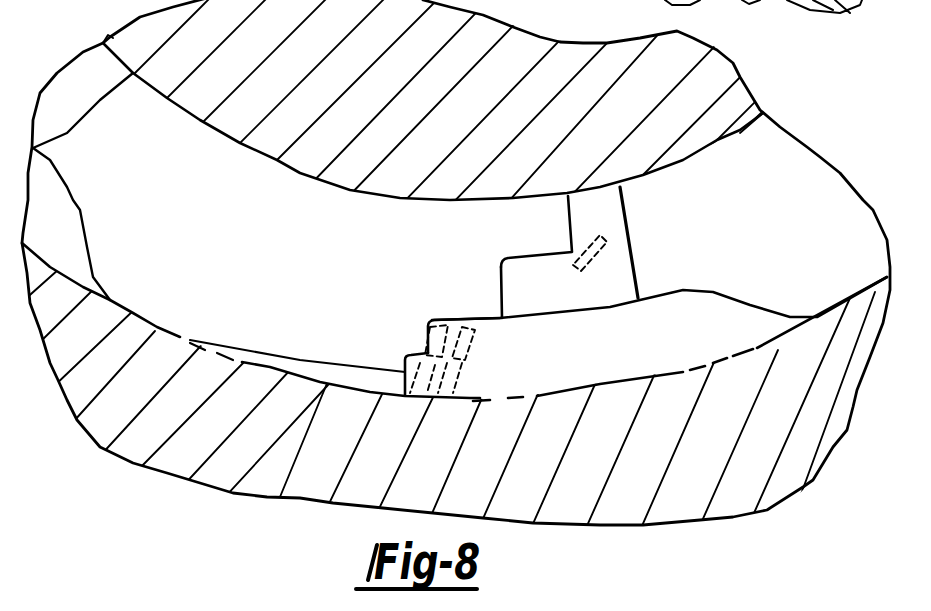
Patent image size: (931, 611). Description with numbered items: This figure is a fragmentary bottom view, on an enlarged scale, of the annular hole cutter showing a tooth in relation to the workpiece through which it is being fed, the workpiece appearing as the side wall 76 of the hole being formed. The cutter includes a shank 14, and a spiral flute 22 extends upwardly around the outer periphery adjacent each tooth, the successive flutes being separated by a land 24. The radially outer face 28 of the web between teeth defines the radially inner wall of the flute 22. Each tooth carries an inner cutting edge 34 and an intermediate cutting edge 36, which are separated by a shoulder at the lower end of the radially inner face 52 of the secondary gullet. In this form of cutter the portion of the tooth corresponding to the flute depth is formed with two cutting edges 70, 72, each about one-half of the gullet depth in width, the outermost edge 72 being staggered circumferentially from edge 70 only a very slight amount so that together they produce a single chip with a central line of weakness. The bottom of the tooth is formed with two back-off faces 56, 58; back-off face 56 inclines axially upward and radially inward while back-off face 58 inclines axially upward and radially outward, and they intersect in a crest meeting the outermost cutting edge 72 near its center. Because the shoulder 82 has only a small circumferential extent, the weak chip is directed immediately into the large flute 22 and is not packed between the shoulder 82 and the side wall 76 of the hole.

The back-off face 56 is at (287, 182).
The land 24 is at (138, 322).
The shank 14 is at (307, 307).
The back-off face 58 is at (313, 374).
The side wall of the hole 76 is at (685, 370).
The radially outer face of web 28 is at (560, 320).
The spiral flute 22 is at (667, 348).
The cutting edge 34 is at (570, 217).
The cutting edge 36 is at (500, 278).
The radially inner face of gullet 52 is at (570, 256).
The cutting edge 70 is at (428, 333).
The cutting edge 72 is at (405, 361).
The shoulder 82 is at (410, 377).